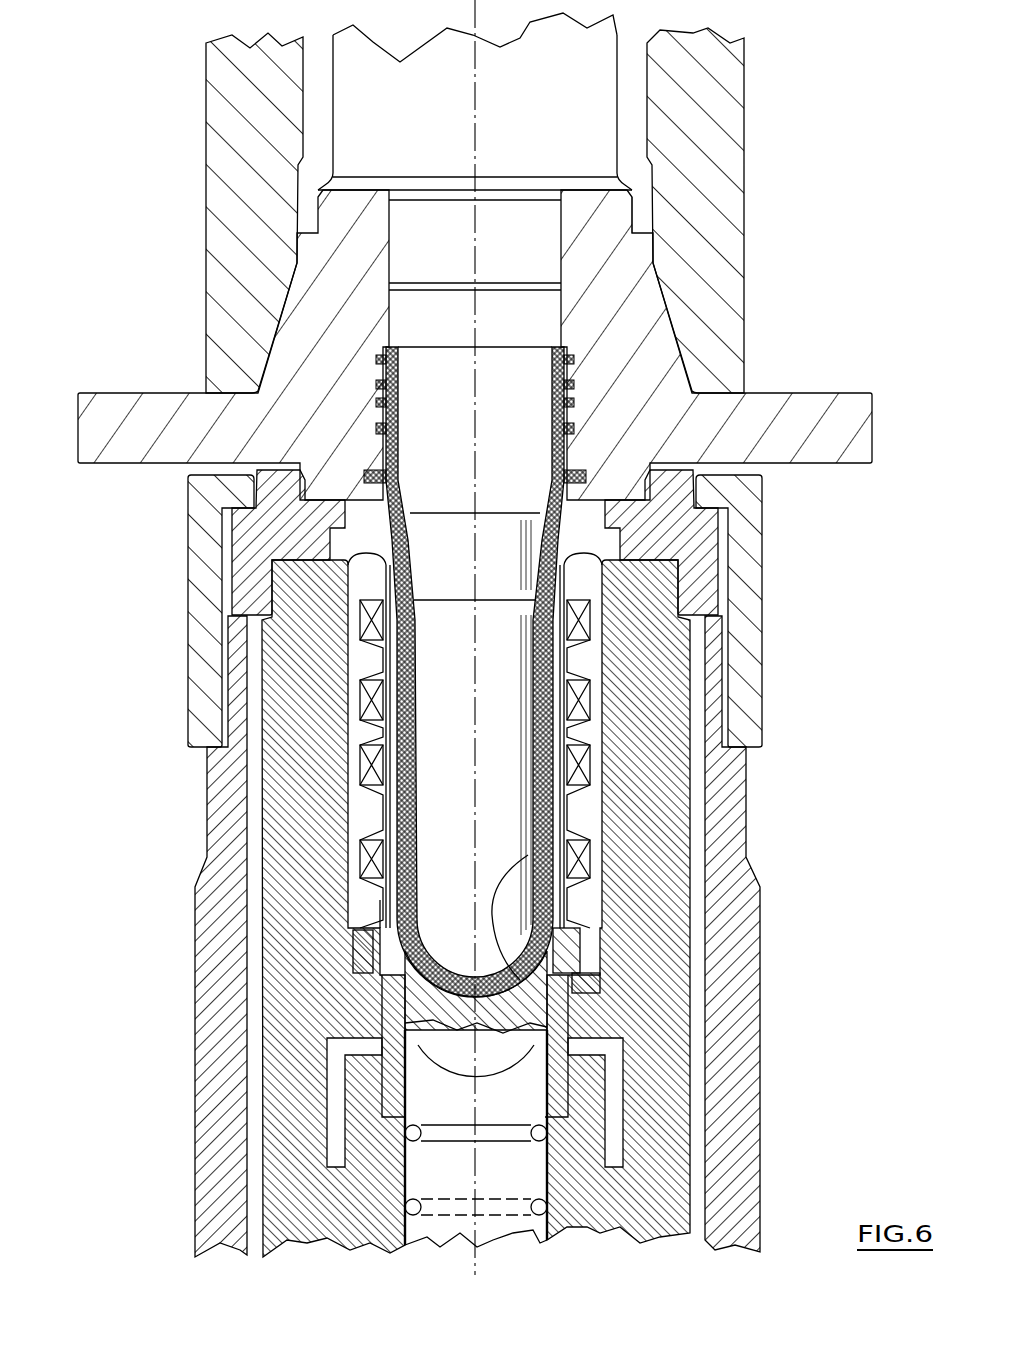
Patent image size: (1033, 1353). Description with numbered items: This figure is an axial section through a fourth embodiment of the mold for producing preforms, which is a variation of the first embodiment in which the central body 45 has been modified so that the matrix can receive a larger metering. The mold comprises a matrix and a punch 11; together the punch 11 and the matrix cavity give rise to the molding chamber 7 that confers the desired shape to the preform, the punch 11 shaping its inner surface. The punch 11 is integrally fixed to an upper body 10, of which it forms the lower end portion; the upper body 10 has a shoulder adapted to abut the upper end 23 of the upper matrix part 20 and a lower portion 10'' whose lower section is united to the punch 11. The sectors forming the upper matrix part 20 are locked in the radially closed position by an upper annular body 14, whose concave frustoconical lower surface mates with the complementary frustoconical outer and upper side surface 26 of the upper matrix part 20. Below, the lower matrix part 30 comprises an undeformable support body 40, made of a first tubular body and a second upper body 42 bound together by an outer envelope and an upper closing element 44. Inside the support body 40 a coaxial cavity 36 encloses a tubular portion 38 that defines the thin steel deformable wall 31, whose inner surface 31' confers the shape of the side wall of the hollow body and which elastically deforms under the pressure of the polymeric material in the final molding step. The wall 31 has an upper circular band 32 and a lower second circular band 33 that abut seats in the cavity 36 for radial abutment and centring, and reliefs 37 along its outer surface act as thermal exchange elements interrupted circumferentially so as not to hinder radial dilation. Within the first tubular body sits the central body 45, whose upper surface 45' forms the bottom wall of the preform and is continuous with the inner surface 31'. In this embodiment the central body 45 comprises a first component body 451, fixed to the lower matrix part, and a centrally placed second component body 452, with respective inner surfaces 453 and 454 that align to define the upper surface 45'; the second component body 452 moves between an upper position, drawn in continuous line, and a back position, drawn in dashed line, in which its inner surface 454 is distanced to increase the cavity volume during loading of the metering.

The upper body 10 is at (372, 101).
The upper annular body 14 is at (746, 116).
The upper end of the upper matrix part 23 is at (330, 168).
The lower portion of the upper body 10'' is at (743, 202).
The upper matrix part 20 is at (260, 378).
The outer and upper side surface of the upper matrix part 26 is at (672, 293).
The upper closing element 44 is at (214, 516).
The second upper body 42 is at (740, 544).
The circular band 32 is at (332, 548).
The molding chamber 7 is at (553, 679).
The lower matrix part 30 is at (188, 690).
The reliefs 37 is at (590, 700).
The coaxial cavity 36 is at (615, 735).
The tubular portion 38 is at (600, 815).
The deformable wall 31 is at (250, 746).
The inner surface of the deformable wall 31' is at (239, 670).
The inner surface of the second component body 454 is at (698, 860).
The support body 40 is at (745, 845).
The inner surface of the first component body 453 is at (590, 906).
The central body 45 is at (682, 935).
The upper surface of the central body 45' is at (234, 936).
The punch 11 is at (440, 912).
The second circular band 33 is at (353, 948).
The first component body 451 is at (415, 1000).
The second component body 452 is at (405, 1038).